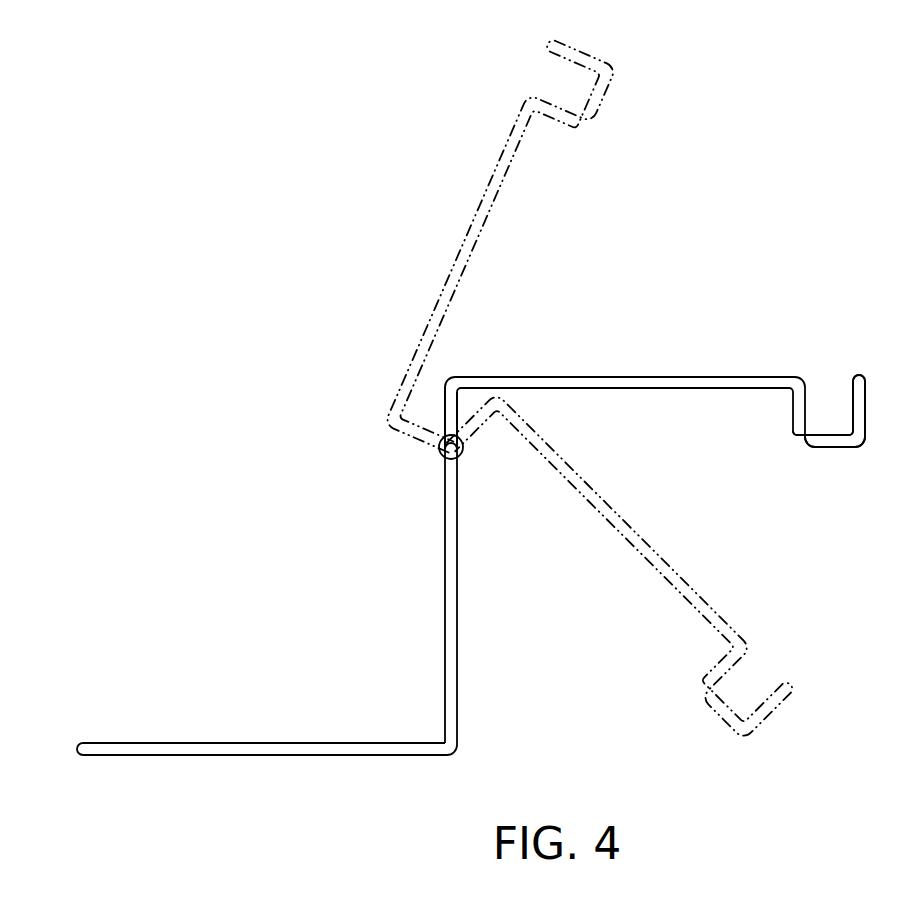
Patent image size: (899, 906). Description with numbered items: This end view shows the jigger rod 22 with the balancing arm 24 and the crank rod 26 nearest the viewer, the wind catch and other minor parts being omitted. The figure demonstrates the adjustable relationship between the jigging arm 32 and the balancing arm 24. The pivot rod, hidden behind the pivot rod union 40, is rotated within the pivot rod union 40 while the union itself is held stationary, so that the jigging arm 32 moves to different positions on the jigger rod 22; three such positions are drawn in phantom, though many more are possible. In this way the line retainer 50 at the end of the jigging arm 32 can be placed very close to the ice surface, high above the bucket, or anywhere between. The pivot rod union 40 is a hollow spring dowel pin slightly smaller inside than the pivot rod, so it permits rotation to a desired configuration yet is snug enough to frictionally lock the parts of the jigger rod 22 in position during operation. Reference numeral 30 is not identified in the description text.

The jigger rod 22 is at (330, 601).
The balancing arm 24 is at (279, 748).
The crank rod 26 is at (442, 595).
The pivotable arm assembly 30 is at (448, 415).
The jigging arm 32 is at (498, 167).
The pivot rod union 40 is at (441, 456).
The line retainer 50 is at (827, 442).